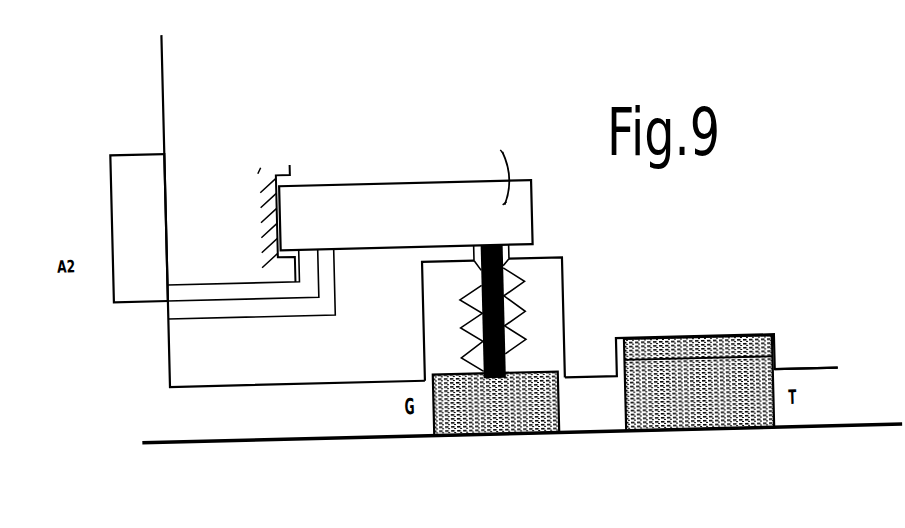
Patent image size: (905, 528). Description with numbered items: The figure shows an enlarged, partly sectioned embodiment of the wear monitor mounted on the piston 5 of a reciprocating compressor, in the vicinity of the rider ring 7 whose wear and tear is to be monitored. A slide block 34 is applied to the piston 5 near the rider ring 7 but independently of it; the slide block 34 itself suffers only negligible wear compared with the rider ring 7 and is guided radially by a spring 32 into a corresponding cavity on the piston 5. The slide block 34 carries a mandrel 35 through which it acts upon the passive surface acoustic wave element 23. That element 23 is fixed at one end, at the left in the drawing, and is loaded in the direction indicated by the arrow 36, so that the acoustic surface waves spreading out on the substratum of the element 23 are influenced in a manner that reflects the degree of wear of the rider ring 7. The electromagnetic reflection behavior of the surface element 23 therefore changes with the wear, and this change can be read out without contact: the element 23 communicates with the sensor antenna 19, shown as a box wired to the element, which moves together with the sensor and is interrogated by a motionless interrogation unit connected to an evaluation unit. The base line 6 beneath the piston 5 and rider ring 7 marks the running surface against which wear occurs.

The sensor antenna 19 is at (117, 195).
The surface acoustic wave element 23 is at (372, 236).
The arrow 36 is at (521, 163).
The mandrel 35 is at (513, 266).
The spring 32 is at (565, 280).
The slide block 34 is at (499, 428).
The rider ring 7 is at (741, 432).
The piston 5 is at (806, 376).
The base plate 6 is at (818, 451).